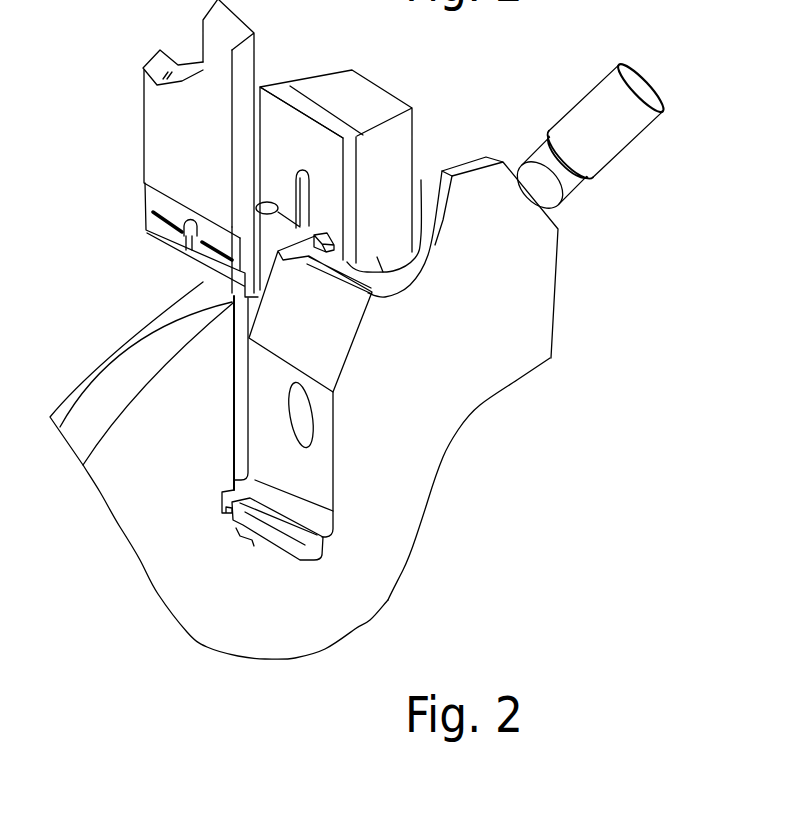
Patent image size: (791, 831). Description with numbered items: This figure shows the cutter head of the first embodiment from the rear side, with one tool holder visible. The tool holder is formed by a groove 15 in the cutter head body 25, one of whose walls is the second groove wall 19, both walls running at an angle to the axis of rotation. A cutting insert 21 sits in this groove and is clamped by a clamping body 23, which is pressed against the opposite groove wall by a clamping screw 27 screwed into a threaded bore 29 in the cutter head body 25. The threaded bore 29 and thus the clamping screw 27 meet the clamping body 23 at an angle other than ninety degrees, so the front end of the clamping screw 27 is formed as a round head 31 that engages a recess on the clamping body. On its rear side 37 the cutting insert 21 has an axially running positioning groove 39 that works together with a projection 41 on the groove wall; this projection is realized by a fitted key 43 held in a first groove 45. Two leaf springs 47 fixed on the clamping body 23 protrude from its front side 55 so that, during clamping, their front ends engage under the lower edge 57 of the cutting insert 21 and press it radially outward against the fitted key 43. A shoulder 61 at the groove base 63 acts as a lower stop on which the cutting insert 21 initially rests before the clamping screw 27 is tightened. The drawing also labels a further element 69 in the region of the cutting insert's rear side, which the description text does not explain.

The groove 15 is at (501, 301).
The second groove wall 19 is at (268, 480).
The cutting insert 21 is at (155, 148).
The clamping body 23 is at (336, 145).
The cutter head body 25 is at (330, 620).
The clamping screw 27 is at (580, 97).
The threaded bore 29 is at (296, 413).
The round head 31 is at (560, 217).
The rear side 37 is at (158, 147).
The positioning groove 39 is at (160, 200).
The projection 41 is at (297, 553).
The fitted key 43 is at (282, 543).
The first groove 45 is at (230, 512).
The leaf springs 47 is at (320, 234).
The front side 55 is at (273, 118).
The lower edge 57 is at (230, 302).
The shoulder 61 is at (253, 547).
The groove base 63 is at (330, 530).
The pin 69 is at (180, 242).